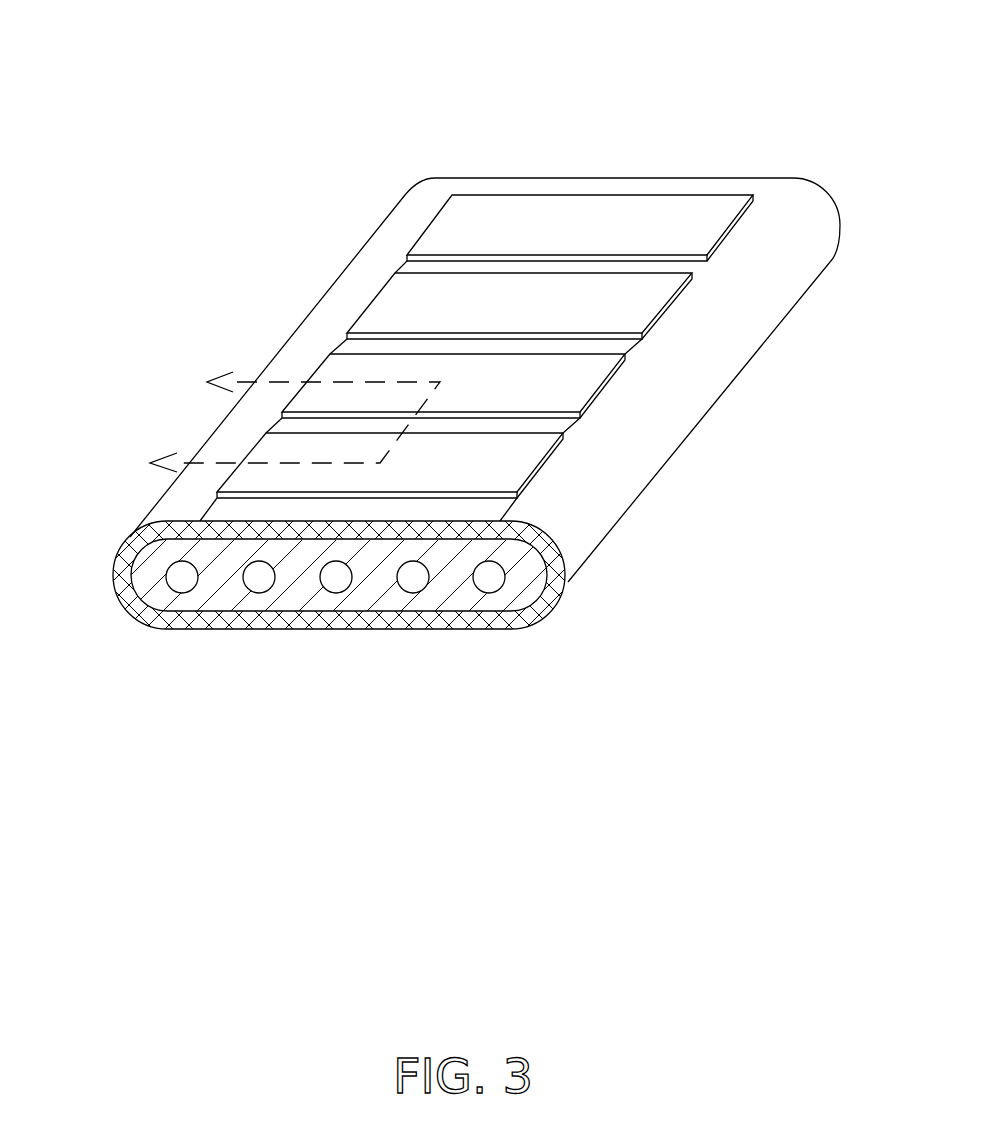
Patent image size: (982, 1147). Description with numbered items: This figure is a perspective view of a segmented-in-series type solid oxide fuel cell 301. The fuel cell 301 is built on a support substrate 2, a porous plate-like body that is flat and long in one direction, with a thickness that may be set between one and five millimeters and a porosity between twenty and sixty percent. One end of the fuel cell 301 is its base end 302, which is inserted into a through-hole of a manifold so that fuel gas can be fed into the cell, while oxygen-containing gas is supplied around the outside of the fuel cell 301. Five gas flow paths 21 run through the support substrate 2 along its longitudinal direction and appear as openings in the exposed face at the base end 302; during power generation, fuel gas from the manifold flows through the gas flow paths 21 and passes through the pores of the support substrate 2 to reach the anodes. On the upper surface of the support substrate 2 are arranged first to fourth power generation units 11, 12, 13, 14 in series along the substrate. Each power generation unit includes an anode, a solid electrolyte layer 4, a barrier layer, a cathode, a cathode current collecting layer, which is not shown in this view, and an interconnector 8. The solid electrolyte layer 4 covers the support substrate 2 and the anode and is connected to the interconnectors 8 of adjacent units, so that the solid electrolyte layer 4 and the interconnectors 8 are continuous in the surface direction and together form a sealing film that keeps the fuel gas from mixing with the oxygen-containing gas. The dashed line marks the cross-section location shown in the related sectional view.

The fuel cell 301 is at (422, 353).
The base end 302 is at (353, 565).
The support substrate 2 is at (483, 603).
The solid electrolyte layer 4 is at (552, 557).
The interconnector 8 is at (515, 428).
The first power generation unit 11 is at (347, 470).
The second power generation unit 12 is at (380, 368).
The third power generation unit 13 is at (418, 302).
The fourth power generation unit 14 is at (447, 230).
The gas flow path 21 is at (338, 577).